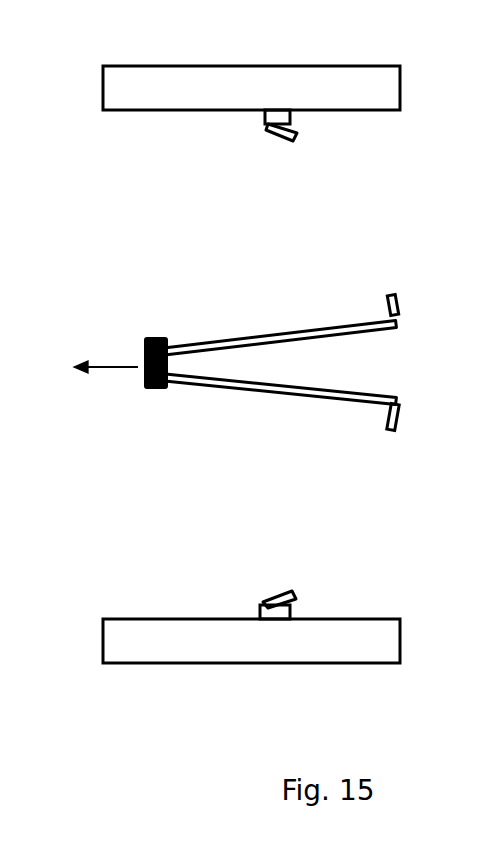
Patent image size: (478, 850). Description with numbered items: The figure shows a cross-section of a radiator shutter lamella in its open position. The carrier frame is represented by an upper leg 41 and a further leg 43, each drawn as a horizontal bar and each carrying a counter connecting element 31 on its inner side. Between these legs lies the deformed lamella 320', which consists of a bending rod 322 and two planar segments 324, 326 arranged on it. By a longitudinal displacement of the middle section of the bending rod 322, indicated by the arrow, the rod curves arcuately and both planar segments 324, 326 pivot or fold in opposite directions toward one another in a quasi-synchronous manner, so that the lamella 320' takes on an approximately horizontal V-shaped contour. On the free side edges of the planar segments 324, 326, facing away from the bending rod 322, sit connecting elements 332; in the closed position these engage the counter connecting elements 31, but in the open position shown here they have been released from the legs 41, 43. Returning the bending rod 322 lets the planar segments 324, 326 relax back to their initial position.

The upper leg 41 is at (137, 75).
The lateral leg 43 is at (113, 627).
The counter connecting element 31 is at (283, 140).
The deformed lamella 320' is at (218, 366).
The bending rod 322 is at (148, 337).
The planar segment 324 is at (303, 330).
The planar segment 326 is at (303, 400).
The connecting element 332 is at (392, 293).